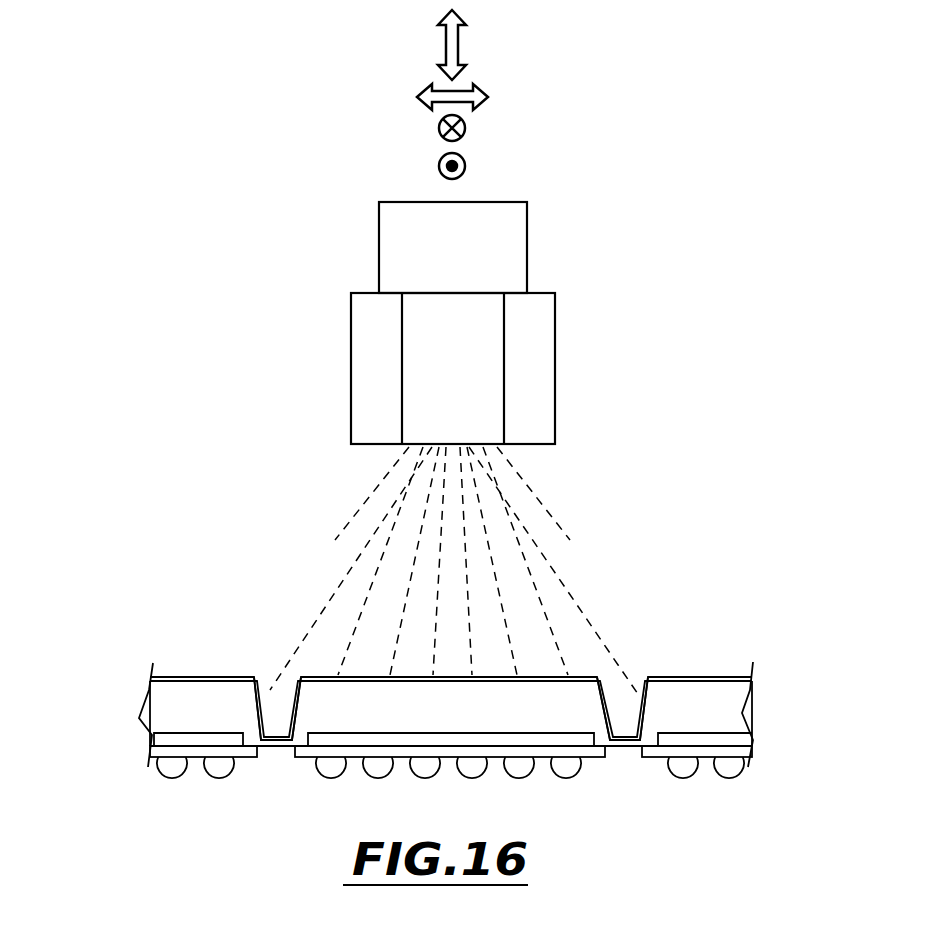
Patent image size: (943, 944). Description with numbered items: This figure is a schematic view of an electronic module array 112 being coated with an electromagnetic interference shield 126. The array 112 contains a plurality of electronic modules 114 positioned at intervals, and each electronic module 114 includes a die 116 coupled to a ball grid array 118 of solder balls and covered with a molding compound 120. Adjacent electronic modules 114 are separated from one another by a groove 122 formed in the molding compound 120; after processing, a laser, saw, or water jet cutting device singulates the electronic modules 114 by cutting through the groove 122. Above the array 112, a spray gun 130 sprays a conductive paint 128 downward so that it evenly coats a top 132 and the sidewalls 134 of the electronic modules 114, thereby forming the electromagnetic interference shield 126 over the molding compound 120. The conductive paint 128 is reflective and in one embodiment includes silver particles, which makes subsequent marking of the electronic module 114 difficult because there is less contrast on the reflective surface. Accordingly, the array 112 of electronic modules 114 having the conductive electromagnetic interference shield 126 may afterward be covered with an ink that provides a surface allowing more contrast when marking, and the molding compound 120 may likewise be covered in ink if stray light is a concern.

The electronic module array 112 is at (748, 597).
The electronic module 114 is at (590, 658).
The die 116 is at (155, 738).
The ball grid array 118 is at (422, 768).
The molding compound 120 is at (165, 707).
The groove 122 is at (626, 705).
The electromagnetic interference shield 126 is at (707, 676).
The conductive paint 128 is at (582, 608).
The spray gun 130 is at (505, 250).
The top 132 is at (318, 676).
The sidewalls 134 is at (288, 698).